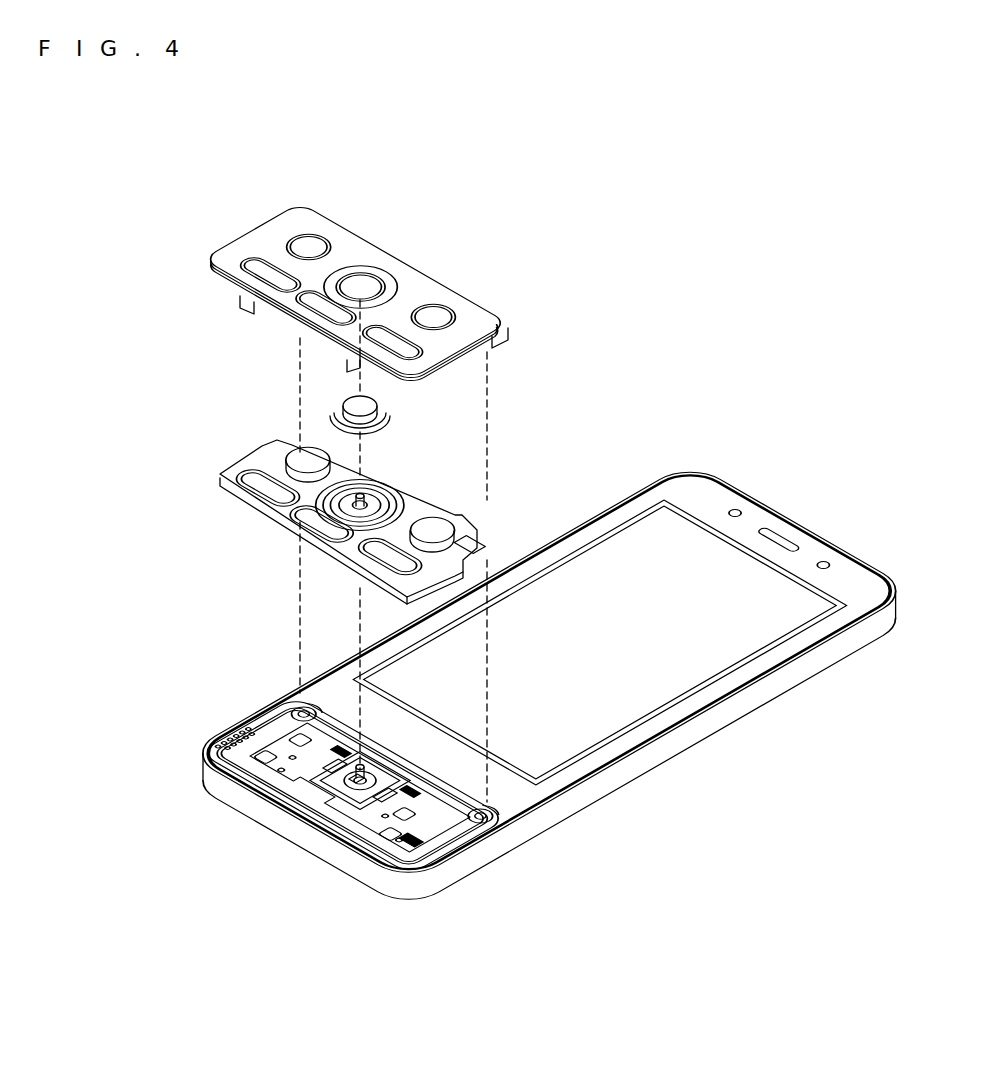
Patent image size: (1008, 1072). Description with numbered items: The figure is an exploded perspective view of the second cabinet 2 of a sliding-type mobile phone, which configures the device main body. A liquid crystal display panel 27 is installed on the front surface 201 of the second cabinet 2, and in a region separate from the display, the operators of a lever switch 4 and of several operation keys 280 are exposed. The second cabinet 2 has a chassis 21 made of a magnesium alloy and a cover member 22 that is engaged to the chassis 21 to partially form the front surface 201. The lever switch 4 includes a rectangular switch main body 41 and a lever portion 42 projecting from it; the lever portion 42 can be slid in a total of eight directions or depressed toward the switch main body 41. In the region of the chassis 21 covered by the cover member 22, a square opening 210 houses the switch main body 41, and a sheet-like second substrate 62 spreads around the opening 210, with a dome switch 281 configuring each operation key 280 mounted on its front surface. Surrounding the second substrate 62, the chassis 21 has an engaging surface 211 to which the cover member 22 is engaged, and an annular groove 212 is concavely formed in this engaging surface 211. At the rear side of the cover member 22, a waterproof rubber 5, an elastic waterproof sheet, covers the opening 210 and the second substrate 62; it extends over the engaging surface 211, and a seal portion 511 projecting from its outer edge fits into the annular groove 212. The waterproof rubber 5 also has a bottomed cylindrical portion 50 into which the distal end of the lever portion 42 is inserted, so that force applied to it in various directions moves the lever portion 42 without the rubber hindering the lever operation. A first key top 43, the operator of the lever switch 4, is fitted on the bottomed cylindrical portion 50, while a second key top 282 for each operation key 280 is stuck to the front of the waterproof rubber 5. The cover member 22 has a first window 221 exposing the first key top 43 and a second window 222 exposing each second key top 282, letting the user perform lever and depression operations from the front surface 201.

The second cabinet 2 is at (780, 491).
The lever switch 4 is at (340, 918).
The waterproof rubber 5 is at (223, 475).
The chassis 21 is at (268, 711).
The cover member 22 is at (485, 325).
The liquid crystal display panel 27 is at (707, 657).
The switch main body 41 is at (352, 806).
The lever portion 42 is at (322, 796).
The first key top 43 is at (353, 400).
The bottomed cylindrical portion 50 is at (365, 495).
The second substrate 62 is at (412, 840).
The front surface 201 is at (272, 232).
The opening 210 is at (300, 790).
The engaging surface 211 is at (215, 736).
The annular groove 212 is at (240, 735).
The first window 221 is at (362, 280).
The second window 222 is at (433, 308).
The operation key 280 is at (460, 510).
The dome switch 281 is at (432, 830).
The second key top 282 is at (433, 525).
The seal portion 511 is at (245, 507).